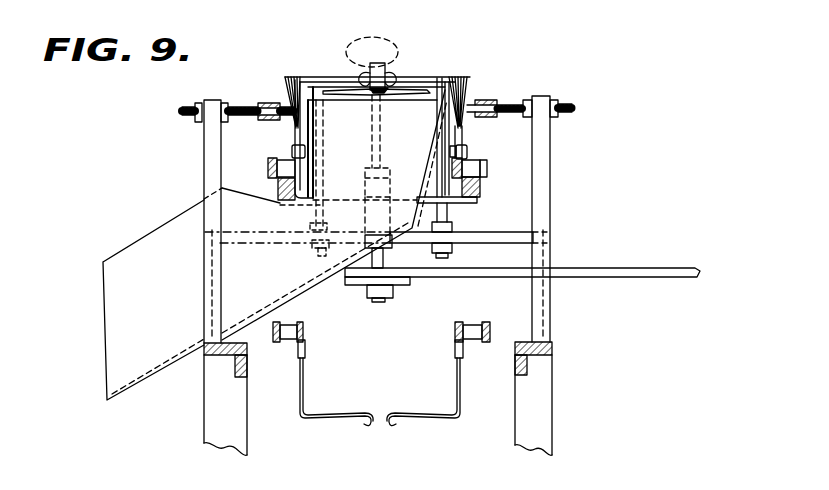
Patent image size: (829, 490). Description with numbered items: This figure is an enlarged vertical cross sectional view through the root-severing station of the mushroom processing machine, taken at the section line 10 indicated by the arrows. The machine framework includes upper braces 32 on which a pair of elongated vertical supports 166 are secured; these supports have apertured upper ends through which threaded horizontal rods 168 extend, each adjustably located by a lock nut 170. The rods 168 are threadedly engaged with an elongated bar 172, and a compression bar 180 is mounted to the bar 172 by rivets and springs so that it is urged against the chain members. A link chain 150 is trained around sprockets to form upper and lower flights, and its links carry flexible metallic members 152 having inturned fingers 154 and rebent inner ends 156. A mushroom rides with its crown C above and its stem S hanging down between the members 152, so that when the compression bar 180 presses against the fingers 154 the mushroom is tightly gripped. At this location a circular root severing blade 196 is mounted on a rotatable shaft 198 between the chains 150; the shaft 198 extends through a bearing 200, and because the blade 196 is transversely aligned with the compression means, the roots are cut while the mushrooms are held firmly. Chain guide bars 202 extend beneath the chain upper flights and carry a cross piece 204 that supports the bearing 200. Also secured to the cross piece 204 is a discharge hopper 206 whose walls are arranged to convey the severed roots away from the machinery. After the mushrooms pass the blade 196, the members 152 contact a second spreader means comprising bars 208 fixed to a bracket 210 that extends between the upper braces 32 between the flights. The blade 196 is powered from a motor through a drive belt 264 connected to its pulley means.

The section line 10 is at (175, 110).
The crown C is at (386, 40).
The stem S is at (364, 72).
The rebent inner end 156 is at (385, 79).
The circular root severing blade 196 is at (414, 90).
The inturned finger 154 is at (433, 78).
The flexible metallic member 152 is at (466, 93).
The compression bar 180 is at (466, 102).
The elongated bar 172 is at (494, 102).
The lock nut 170 is at (558, 100).
The threaded horizontal rod 168 is at (573, 103).
The vertical support 166 is at (545, 209).
The link chain 150 is at (481, 162).
The bar 208 is at (322, 175).
The chain guide bar 202 is at (475, 190).
The cross piece 204 is at (440, 203).
The bearing 200 is at (394, 236).
The rotatable shaft 198 is at (383, 258).
The drive belt 264 is at (676, 277).
The bracket 210 is at (548, 315).
The upper brace 32 is at (555, 352).
The discharge hopper 206 is at (146, 357).